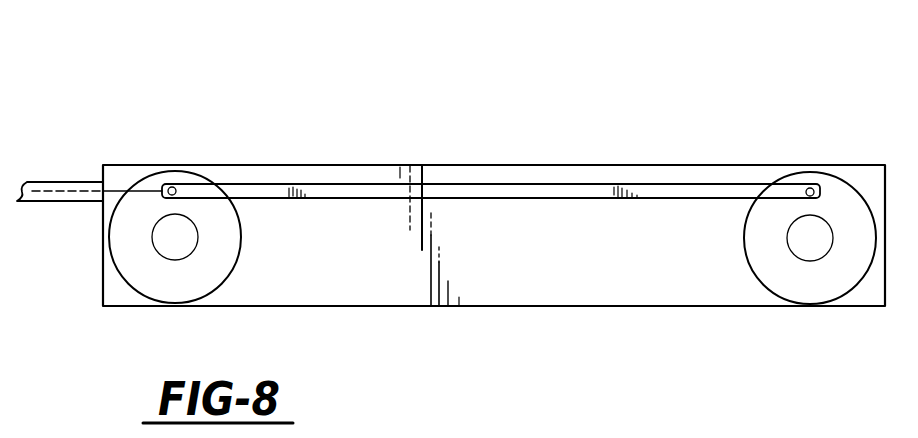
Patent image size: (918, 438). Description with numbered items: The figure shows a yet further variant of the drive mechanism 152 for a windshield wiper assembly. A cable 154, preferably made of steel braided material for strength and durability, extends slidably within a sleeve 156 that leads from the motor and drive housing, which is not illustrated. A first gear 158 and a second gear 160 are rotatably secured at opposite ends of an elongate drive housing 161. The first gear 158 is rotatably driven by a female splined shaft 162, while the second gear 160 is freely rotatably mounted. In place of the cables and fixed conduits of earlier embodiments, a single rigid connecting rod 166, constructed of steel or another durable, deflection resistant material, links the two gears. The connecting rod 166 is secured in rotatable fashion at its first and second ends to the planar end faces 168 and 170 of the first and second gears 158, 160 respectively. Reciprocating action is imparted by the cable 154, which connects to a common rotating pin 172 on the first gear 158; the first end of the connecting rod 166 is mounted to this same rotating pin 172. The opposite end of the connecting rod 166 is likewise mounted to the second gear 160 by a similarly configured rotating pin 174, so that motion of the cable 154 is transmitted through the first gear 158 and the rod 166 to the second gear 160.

The drive mechanism 152 is at (378, 118).
The cable 154 is at (117, 205).
The sleeve 156 is at (70, 181).
The first gear 158 is at (132, 254).
The second gear 160 is at (770, 259).
The elongate drive housing 161 is at (423, 308).
The female splined shaft 162 is at (183, 233).
The connecting rod 166 is at (530, 196).
The planar end face of first gear 168 is at (198, 288).
The planar end face of second gear 170 is at (830, 294).
The rotating pin 172 is at (173, 188).
The rotating pin 174 is at (810, 188).